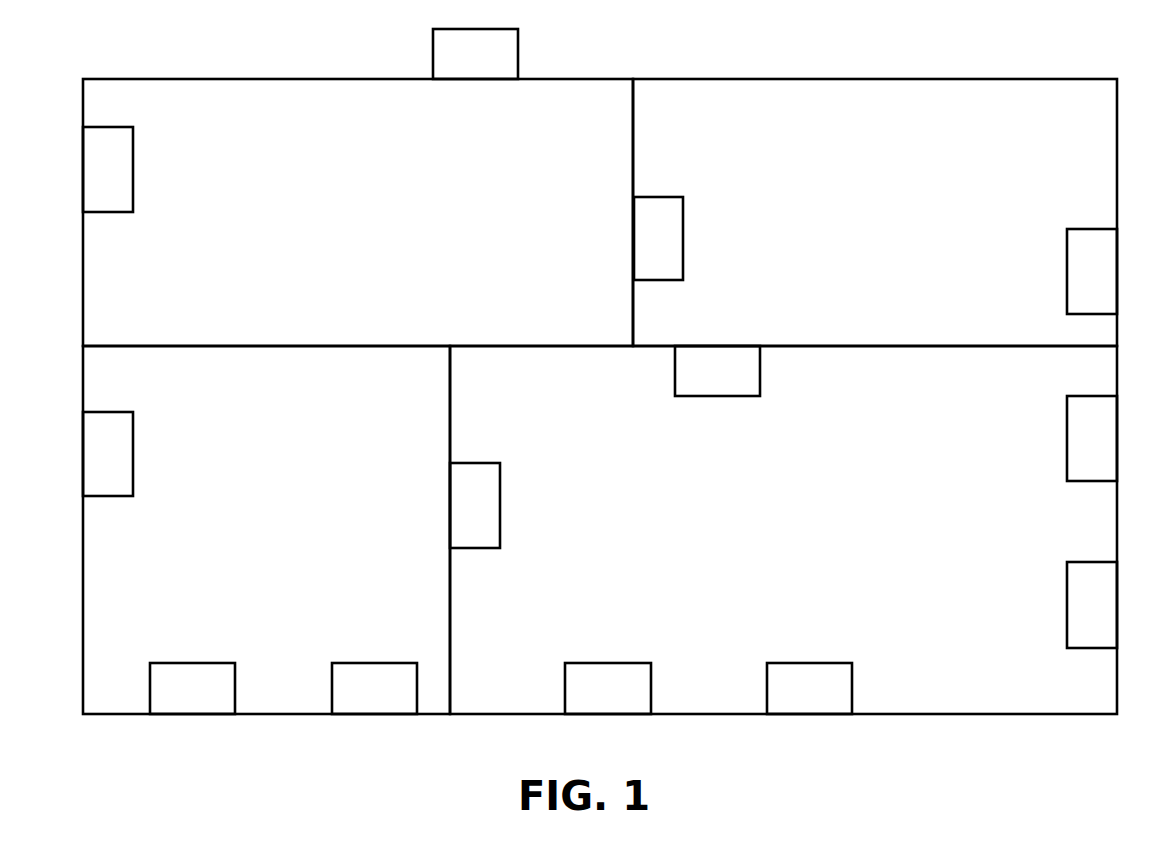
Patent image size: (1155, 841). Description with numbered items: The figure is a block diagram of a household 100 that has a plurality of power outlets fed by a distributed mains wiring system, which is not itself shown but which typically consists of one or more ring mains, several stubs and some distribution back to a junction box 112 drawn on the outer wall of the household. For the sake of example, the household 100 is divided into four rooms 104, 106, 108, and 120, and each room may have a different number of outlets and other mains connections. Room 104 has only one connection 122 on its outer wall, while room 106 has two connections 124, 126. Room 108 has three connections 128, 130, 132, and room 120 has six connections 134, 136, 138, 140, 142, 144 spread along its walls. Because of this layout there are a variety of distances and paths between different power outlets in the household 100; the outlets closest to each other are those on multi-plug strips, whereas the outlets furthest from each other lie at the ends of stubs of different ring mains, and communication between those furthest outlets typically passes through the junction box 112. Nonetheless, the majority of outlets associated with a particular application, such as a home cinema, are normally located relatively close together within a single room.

The household 100 is at (160, 784).
The room 104 is at (376, 224).
The room 106 is at (893, 224).
The room 108 is at (283, 541).
The room 120 is at (800, 541).
The junction box 112 is at (473, 80).
The connection 122 is at (133, 131).
The connection 124 is at (662, 196).
The connection 126 is at (1083, 228).
The connection 128 is at (133, 416).
The connection 130 is at (180, 662).
The connection 132 is at (357, 662).
The connection 134 is at (482, 462).
The connection 136 is at (723, 397).
The connection 138 is at (1083, 395).
The connection 140 is at (1083, 561).
The connection 142 is at (800, 662).
The connection 144 is at (600, 662).